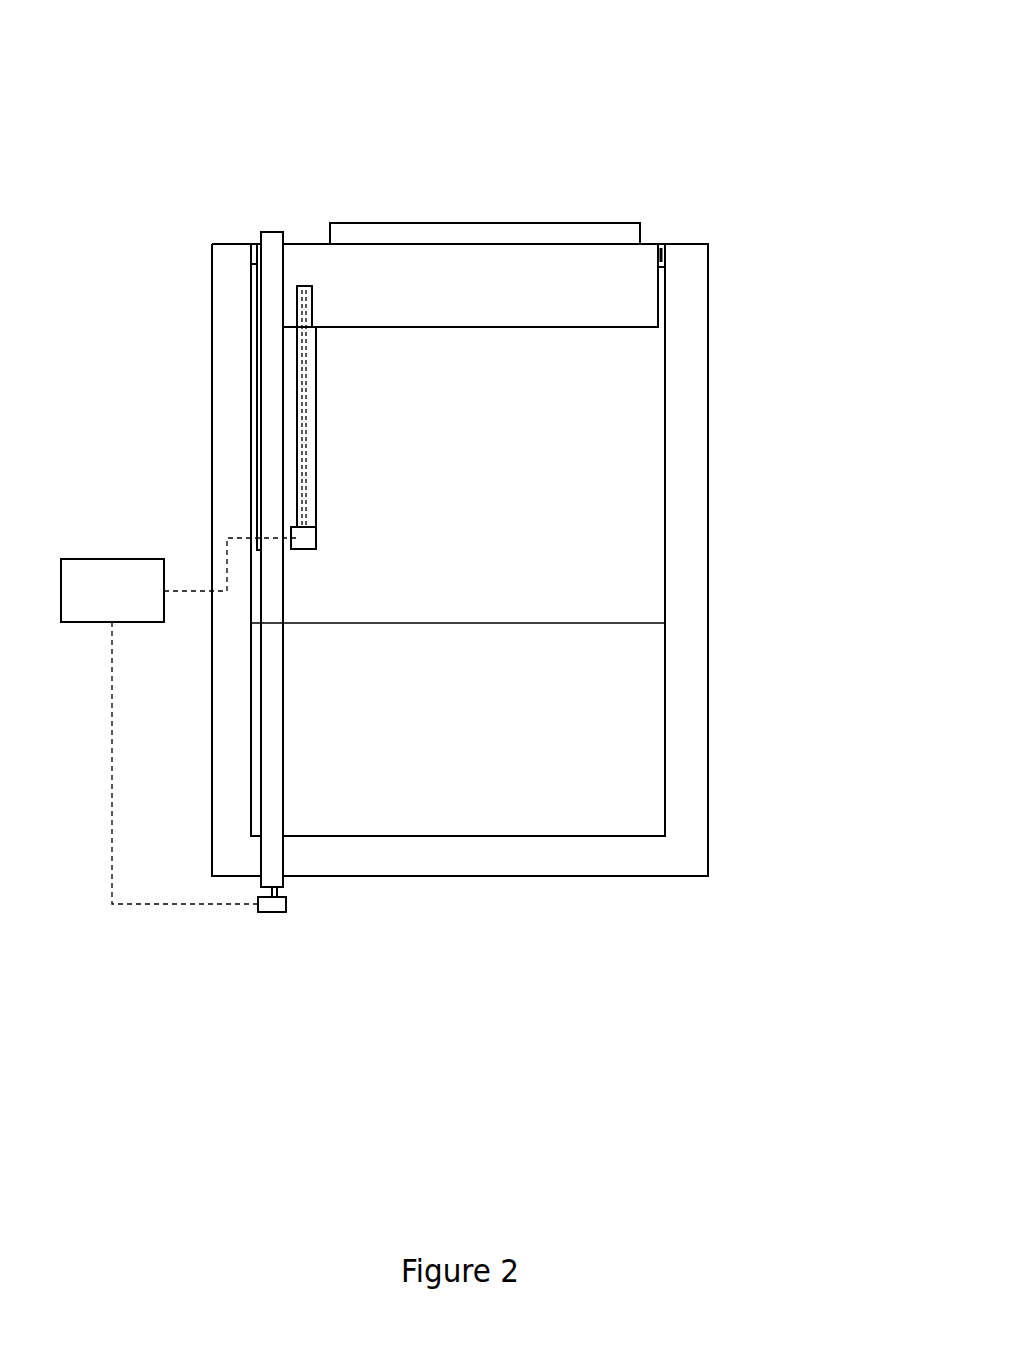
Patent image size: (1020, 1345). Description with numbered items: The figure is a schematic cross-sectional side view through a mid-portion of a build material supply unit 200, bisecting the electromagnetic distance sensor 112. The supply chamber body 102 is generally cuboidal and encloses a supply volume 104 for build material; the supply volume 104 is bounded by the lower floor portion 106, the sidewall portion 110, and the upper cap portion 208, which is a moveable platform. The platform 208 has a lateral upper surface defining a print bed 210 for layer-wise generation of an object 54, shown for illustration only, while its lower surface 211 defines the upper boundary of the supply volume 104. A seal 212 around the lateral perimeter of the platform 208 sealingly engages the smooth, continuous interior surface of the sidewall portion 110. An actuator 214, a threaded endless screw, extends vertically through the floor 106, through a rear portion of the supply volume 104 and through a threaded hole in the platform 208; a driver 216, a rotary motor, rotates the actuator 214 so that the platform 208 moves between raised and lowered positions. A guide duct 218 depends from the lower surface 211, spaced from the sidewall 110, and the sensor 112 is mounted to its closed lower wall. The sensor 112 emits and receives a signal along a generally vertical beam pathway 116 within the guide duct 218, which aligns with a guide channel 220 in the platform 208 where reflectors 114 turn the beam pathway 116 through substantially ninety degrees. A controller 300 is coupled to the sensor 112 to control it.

The build material supply unit 200 is at (731, 23).
The supply chamber body 102 is at (690, 291).
The supply volume 104 is at (630, 462).
The sidewall portion 110 is at (705, 573).
The lower floor portion 106 is at (483, 863).
The object 54 is at (413, 220).
The upper cap portion 208 is at (478, 272).
The lower surface 211 is at (483, 328).
The print bed 210 is at (592, 232).
The seal 212 is at (666, 244).
The guide channel 220 is at (297, 315).
The beam pathway 116 is at (305, 475).
The guide duct 218 is at (295, 460).
The reflector 114 is at (302, 285).
The electromagnetic distance sensor 112 is at (300, 533).
The actuator 214 is at (273, 713).
The driver 216 is at (275, 912).
The controller 300 is at (179, 721).